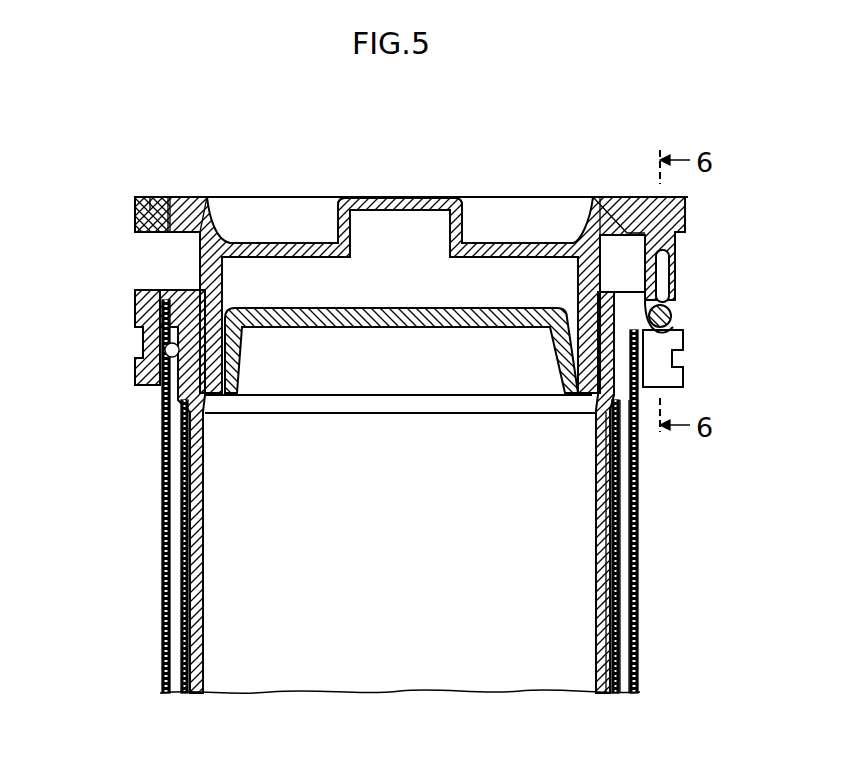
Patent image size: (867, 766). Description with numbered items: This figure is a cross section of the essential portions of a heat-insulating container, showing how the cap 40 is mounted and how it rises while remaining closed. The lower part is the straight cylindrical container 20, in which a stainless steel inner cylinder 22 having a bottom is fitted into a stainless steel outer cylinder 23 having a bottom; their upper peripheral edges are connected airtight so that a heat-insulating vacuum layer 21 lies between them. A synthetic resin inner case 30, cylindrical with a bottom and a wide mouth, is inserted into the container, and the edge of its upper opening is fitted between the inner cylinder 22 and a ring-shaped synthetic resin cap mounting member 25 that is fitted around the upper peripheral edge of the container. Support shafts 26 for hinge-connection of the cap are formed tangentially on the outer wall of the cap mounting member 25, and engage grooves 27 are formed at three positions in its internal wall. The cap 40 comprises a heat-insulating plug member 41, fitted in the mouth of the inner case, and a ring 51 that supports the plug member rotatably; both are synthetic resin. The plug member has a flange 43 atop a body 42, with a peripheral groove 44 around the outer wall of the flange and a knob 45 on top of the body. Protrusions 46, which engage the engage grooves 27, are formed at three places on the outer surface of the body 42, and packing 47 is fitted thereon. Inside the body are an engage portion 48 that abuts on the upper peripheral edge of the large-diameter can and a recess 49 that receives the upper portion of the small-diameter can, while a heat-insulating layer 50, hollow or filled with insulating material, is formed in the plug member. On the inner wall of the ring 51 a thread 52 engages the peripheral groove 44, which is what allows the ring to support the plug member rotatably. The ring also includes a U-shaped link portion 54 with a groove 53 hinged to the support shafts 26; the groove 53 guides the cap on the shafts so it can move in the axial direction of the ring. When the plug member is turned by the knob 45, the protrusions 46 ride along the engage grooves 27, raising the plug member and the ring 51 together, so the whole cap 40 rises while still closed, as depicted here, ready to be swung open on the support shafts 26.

The cylindrical container 20 is at (384, 491).
The heat-insulating vacuum layer 21 is at (626, 636).
The inner cylinder 22 is at (182, 566).
The outer cylinder 23 is at (163, 529).
The cap mounting member 25 is at (135, 336).
The support shafts 26 is at (672, 318).
The engage grooves 27 is at (240, 350).
The inner case 30 is at (608, 517).
The cap 40 is at (496, 196).
The plug member 41 is at (309, 196).
The body 42 is at (198, 263).
The flange 43 is at (184, 196).
The peripheral groove 44 is at (140, 214).
The knob 45 is at (396, 196).
The protrusions 46 is at (604, 268).
The packing 47 is at (222, 300).
The engage portion 48 is at (581, 398).
The recess 49 is at (418, 372).
The heat-insulating layer 50 is at (422, 232).
The ring 51 is at (148, 196).
The thread 52 is at (620, 210).
The groove 53 is at (663, 285).
The link portion 54 is at (668, 326).